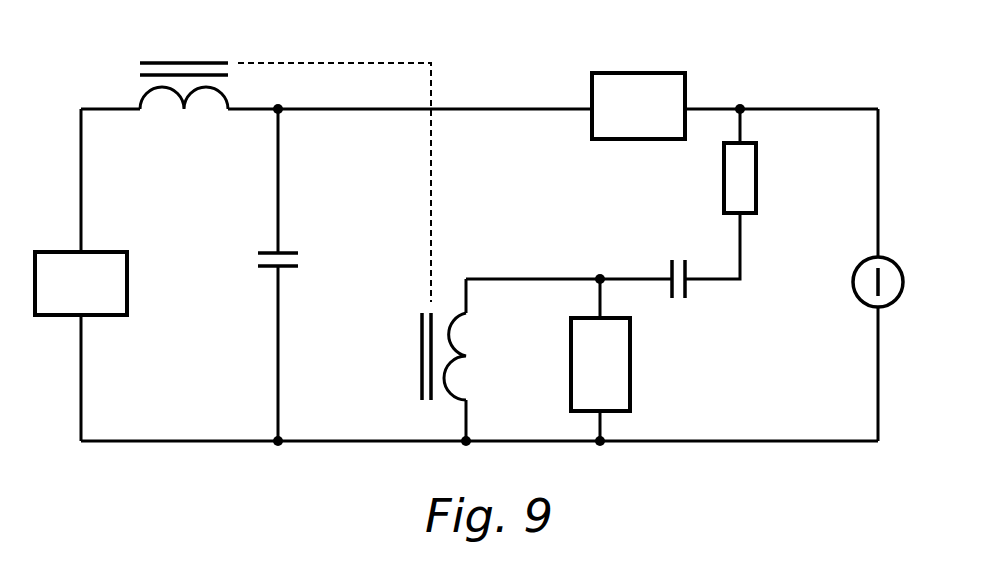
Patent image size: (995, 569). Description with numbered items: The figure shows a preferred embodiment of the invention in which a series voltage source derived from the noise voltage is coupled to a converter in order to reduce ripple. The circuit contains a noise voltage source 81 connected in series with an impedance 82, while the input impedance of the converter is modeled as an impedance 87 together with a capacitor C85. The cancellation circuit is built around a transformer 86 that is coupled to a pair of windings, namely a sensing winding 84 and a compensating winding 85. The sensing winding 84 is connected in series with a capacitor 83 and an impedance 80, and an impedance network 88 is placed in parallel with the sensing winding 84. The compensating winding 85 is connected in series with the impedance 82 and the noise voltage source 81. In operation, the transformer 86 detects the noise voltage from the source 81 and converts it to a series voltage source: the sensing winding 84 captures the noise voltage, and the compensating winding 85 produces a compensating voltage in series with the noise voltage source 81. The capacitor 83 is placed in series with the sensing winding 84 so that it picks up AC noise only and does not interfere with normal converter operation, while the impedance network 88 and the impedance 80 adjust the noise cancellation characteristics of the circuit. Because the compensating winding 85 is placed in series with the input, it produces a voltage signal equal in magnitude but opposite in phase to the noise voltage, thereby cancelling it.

The compensating winding 85 is at (186, 63).
The impedance 87 is at (127, 273).
The capacitor C85 is at (300, 257).
The transformer 86 is at (426, 403).
The sensing winding 84 is at (448, 383).
The impedance 82 is at (645, 73).
The impedance 80 is at (756, 200).
The capacitor 83 is at (672, 268).
The impedance network 88 is at (630, 360).
The noise voltage source 81 is at (862, 304).